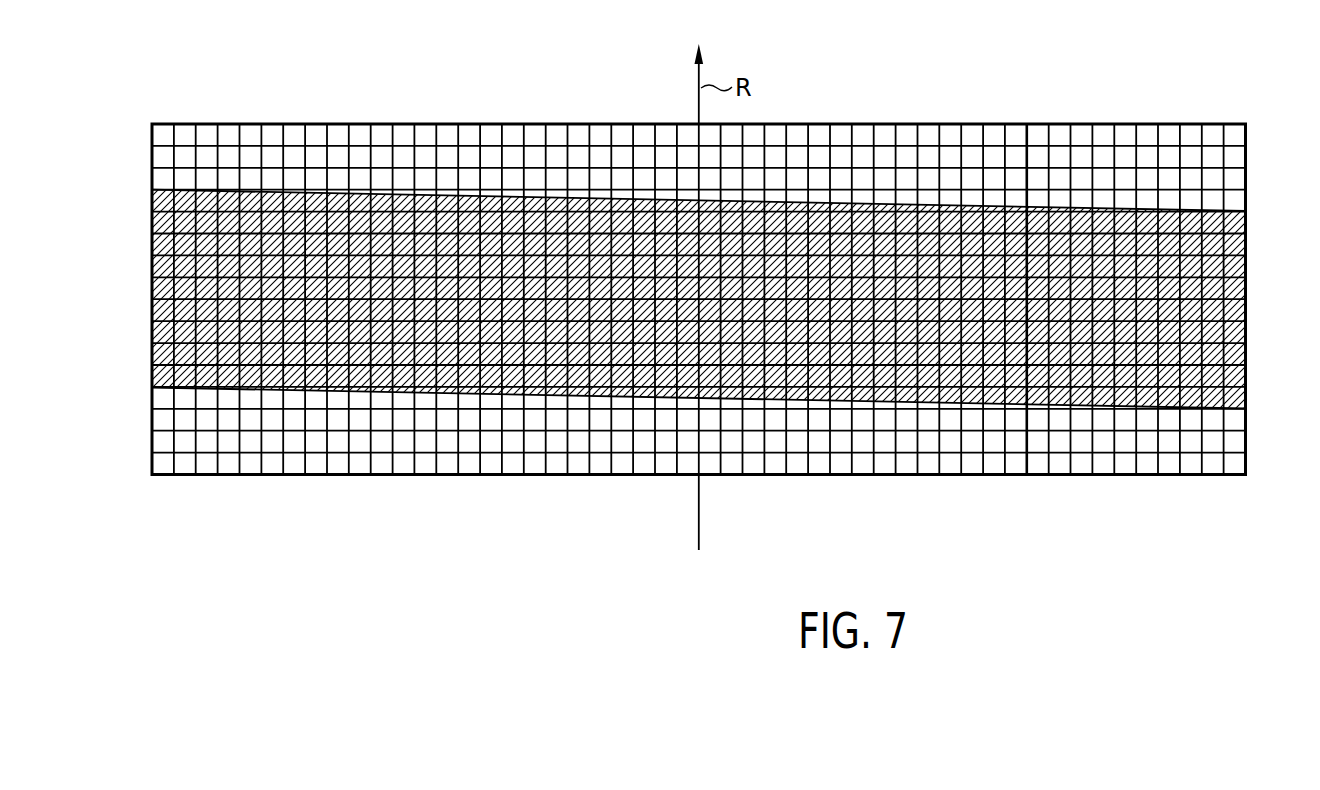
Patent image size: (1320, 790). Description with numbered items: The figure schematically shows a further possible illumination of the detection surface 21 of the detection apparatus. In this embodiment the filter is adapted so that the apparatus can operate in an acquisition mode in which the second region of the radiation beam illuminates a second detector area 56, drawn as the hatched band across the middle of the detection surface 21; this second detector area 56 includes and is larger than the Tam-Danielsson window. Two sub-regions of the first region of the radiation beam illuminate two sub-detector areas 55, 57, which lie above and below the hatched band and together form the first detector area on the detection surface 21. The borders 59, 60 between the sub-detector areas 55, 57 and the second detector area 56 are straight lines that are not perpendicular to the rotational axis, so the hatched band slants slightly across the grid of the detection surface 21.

The detection surface 21 is at (1256, 176).
The sub-detector area 55 is at (137, 156).
The second detector area 56 is at (137, 291).
The sub-detector area 57 is at (137, 436).
The border 59 is at (426, 182).
The border 60 is at (447, 404).